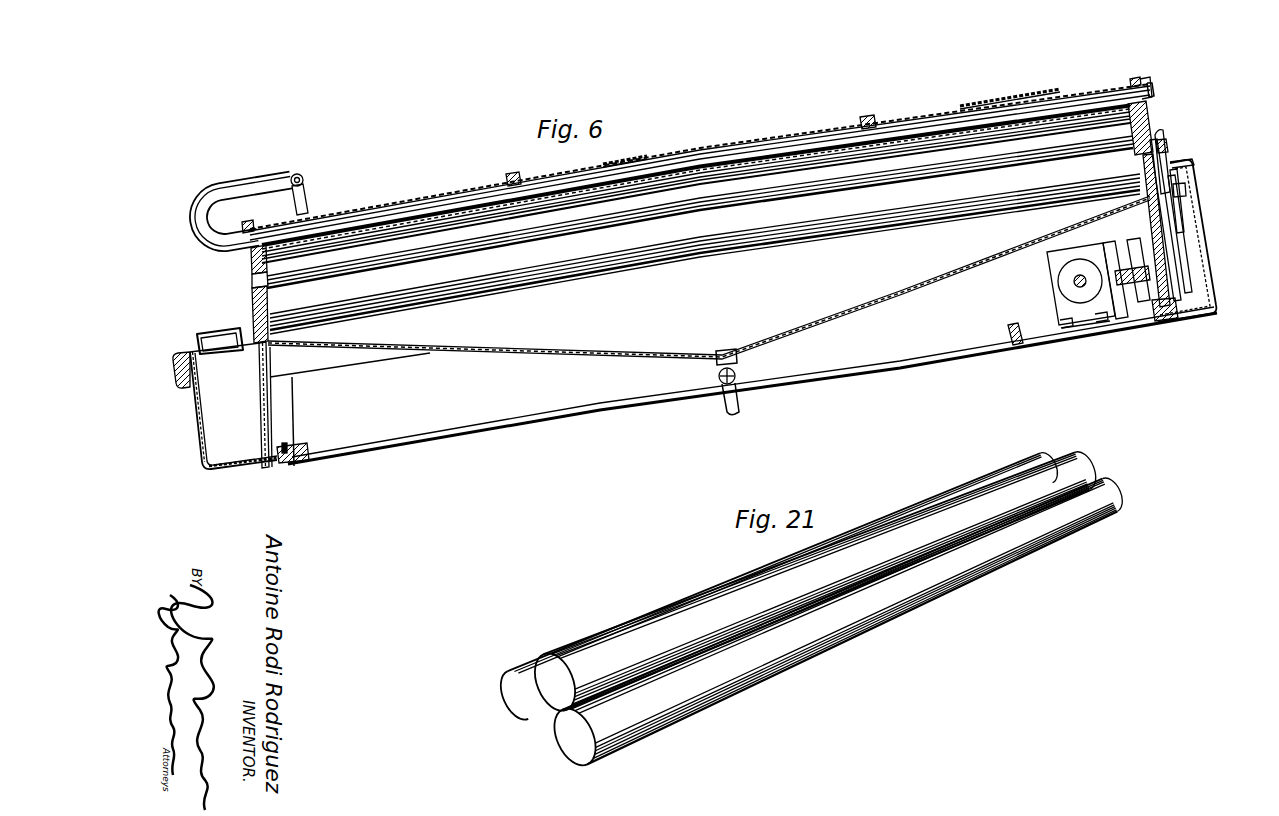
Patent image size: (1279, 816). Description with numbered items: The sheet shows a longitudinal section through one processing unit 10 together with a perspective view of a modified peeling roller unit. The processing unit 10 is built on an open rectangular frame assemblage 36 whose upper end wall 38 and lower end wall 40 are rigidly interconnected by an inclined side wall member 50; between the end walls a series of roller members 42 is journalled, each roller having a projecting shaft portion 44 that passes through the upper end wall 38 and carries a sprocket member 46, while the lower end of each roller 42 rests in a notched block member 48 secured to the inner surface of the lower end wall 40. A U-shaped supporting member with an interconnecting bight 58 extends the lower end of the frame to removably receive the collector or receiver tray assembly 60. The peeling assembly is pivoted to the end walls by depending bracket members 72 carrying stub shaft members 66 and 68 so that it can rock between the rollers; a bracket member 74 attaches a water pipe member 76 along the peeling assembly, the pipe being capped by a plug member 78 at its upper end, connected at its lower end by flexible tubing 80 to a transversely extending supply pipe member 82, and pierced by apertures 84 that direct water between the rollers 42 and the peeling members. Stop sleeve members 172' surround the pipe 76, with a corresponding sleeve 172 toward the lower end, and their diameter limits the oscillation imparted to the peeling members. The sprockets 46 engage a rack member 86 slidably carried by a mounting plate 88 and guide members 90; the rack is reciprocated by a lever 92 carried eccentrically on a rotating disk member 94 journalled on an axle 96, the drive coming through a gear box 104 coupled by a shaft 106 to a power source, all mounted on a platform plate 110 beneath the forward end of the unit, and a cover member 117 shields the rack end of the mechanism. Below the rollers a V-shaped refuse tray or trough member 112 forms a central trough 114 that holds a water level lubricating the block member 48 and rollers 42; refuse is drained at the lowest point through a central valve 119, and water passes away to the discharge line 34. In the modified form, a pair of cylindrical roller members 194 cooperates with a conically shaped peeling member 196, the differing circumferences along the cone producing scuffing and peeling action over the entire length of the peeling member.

In FIG. 6, the processing unit 10 is at (1178, 103).
In FIG. 6, the discharge line 34 is at (741, 403).
In FIG. 6, the open rectangular frame assemblage 36 is at (368, 424).
In FIG. 6, the upper end wall member 38 is at (1135, 158).
In FIG. 6, the lower end wall member 40 is at (254, 312).
In FIG. 6, the roller members 42 is at (840, 218).
In FIG. 6, the projecting shaft portions 44 is at (1172, 160).
In FIG. 6, the sprocket members 46 is at (1180, 171).
In FIG. 6, the notched block members 48 is at (284, 321).
In FIG. 6, the inclined side wall member 50 is at (353, 357).
In FIG. 6, the bight 58 is at (180, 372).
In FIG. 6, the collector or receiver tray assembly 60 is at (242, 474).
In FIG. 6, the stub shaft member 66 is at (1150, 132).
In FIG. 6, the stub shaft member 68 is at (250, 281).
In FIG. 6, the depending bracket members 72 is at (273, 258).
In FIG. 6, the bracket member 74 is at (706, 150).
In FIG. 6, the water pipe members 76 is at (790, 153).
In FIG. 6, the plug members 78 is at (1152, 84).
In FIG. 6, the flexible tubing 80 is at (209, 190).
In FIG. 6, the supply pipe member 82 is at (304, 177).
In FIG. 6, the apertures 84 is at (808, 148).
In FIG. 6, the rack member 86 is at (1194, 172).
In FIG. 6, the mounting plate 88 is at (1186, 203).
In FIG. 6, the guide members 90 is at (1187, 191).
In FIG. 6, the lever 92 is at (1176, 220).
In FIG. 6, the rotating disk member 94 is at (1182, 268).
In FIG. 6, the axle 96 is at (1153, 262).
In FIG. 6, the gear box 104 is at (1050, 259).
In FIG. 6, the shaft 106 is at (1074, 283).
In FIG. 6, the platform plate 110 is at (1085, 330).
In FIG. 6, the refuse tray or trough member 112 is at (530, 355).
In FIG. 6, the trough 114 is at (726, 349).
In FIG. 6, the cover member 117 is at (1216, 262).
In FIG. 6, the central valve 119 is at (740, 359).
In FIG. 6, the stop member 172 is at (245, 192).
In FIG. 6, the stop sleeve members 172' is at (1125, 60).
In FIG. 21, the cylindrical roller members 194 is at (930, 497).
In FIG. 21, the conically shaped peeling member 196 is at (675, 607).